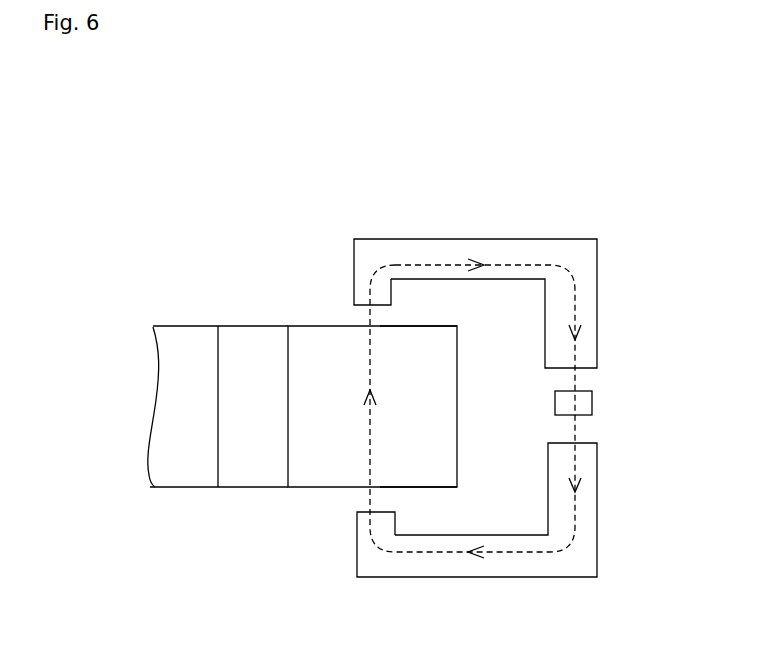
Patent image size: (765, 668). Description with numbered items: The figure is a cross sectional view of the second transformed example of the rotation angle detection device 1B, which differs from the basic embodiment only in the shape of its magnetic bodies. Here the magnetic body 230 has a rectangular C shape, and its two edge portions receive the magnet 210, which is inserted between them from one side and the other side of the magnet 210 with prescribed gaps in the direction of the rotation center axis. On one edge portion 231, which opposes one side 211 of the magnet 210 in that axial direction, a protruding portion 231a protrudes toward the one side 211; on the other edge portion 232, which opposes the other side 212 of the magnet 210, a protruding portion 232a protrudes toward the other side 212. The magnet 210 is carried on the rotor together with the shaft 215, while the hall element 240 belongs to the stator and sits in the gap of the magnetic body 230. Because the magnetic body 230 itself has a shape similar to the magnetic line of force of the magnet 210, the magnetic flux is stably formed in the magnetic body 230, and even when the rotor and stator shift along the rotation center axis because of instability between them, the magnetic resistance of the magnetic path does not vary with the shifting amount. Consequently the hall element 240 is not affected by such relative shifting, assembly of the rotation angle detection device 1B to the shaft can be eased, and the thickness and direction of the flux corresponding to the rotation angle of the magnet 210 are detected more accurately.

The rotation angle detection device 1B is at (486, 127).
The magnetic body 230 is at (548, 237).
The one edge portion 231 is at (372, 238).
The protruding portion 231a is at (358, 302).
The another edge portion 232 is at (367, 578).
The protruding portion 232a is at (355, 506).
The shaft 215 is at (237, 490).
The magnet 210 is at (322, 490).
The one side of the magnet 211 is at (432, 322).
The another side of the magnet 212 is at (432, 488).
The hall element 240 is at (592, 401).